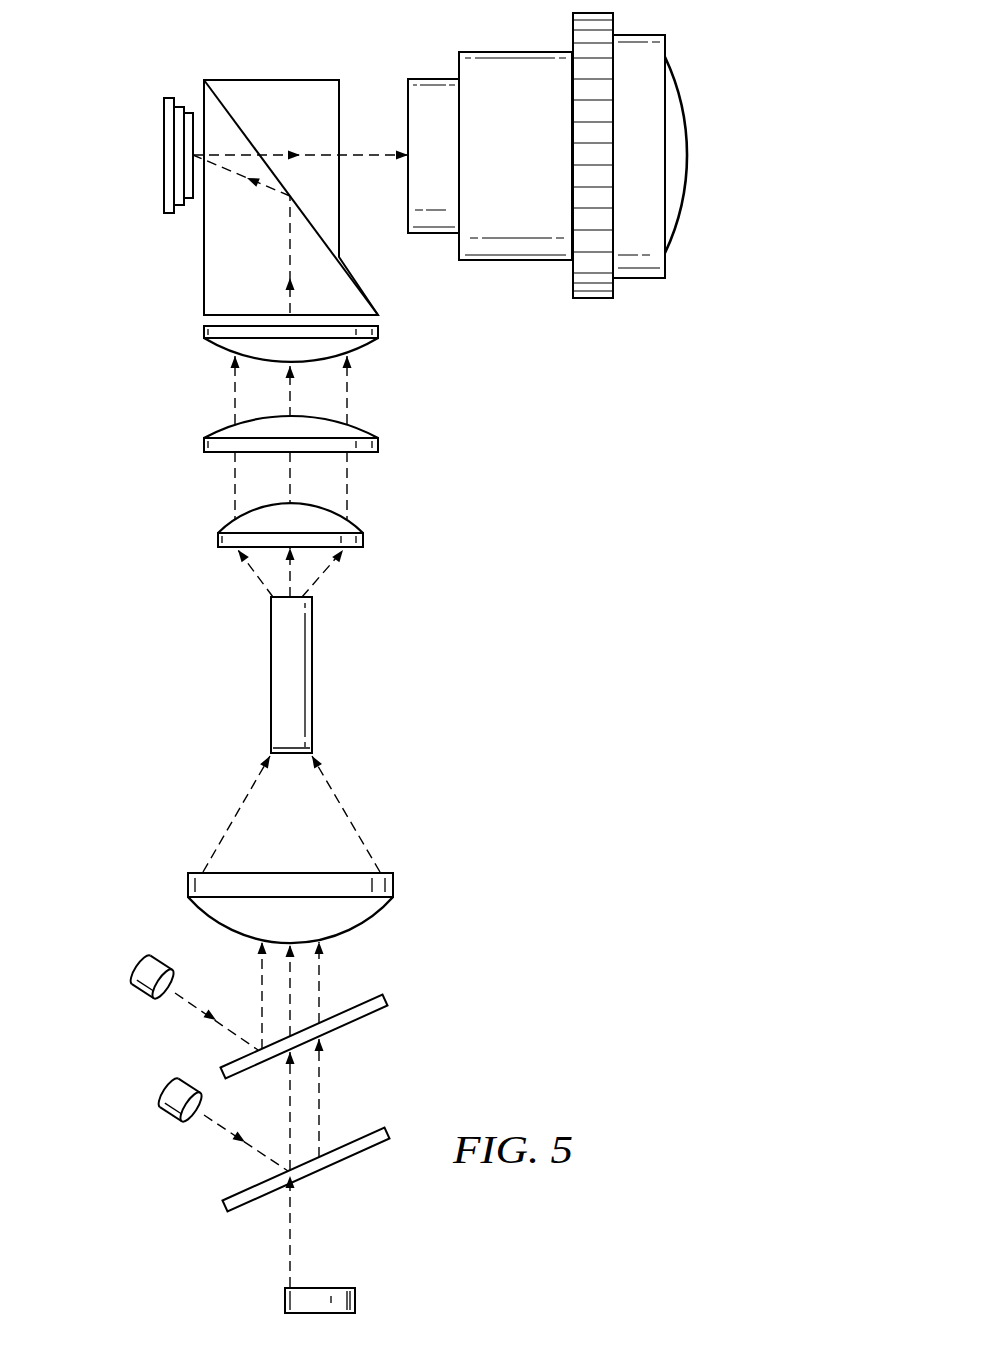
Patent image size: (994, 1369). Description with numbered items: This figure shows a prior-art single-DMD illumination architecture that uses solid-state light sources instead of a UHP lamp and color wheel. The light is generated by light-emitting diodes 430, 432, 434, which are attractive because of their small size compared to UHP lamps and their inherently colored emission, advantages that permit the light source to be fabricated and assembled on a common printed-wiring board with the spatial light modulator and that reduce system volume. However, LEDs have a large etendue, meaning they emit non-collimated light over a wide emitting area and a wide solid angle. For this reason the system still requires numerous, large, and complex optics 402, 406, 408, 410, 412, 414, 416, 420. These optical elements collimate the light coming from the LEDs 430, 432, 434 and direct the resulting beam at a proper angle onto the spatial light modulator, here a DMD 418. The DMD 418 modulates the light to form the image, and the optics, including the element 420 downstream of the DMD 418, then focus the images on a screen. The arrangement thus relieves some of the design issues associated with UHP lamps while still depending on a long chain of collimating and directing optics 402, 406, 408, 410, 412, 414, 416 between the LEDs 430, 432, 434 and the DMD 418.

The optics 402 is at (393, 889).
The optics 406 is at (312, 676).
The optics 408 is at (363, 541).
The optics 410 is at (378, 446).
The optics 412 is at (378, 332).
The optics 414 is at (204, 273).
The optics 416 is at (244, 130).
The DMD 418 is at (163, 130).
The optics 420 is at (687, 155).
The light-emitting diode 430 is at (168, 1117).
The light-emitting diode 432 is at (139, 995).
The light-emitting diode 434 is at (285, 1298).